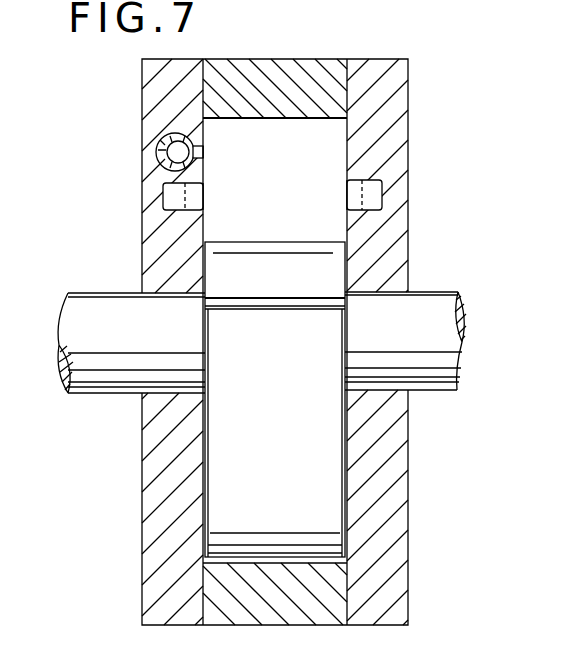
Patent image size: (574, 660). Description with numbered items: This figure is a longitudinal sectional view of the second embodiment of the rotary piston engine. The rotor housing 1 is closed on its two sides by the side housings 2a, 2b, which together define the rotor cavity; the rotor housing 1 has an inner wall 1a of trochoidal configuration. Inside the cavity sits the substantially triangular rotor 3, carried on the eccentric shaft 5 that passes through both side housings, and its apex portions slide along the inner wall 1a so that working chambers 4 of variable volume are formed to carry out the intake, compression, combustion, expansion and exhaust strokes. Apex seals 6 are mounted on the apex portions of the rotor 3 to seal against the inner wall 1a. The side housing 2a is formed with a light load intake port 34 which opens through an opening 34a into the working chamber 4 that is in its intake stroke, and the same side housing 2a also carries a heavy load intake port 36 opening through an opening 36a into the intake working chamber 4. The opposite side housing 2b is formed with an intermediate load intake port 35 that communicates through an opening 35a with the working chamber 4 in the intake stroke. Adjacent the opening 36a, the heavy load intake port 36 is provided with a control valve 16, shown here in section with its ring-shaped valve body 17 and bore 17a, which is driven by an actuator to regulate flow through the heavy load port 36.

The rotor housing 1 is at (293, 60).
The inner wall 1a is at (293, 119).
The side housing 2a is at (393, 82).
The side housing 2b is at (150, 70).
The rotor 3 is at (320, 358).
The working chamber 4 is at (288, 193).
The eccentric shaft 5 is at (97, 308).
The apex seal 6 is at (277, 310).
The control valve 16 is at (157, 130).
The bushing ring 17 is at (162, 155).
The bushing bore 17a is at (183, 153).
The light load intake port 34 is at (382, 195).
The opening 34a is at (347, 195).
The intermediate load intake port 35 is at (174, 197).
The opening 35a is at (203, 200).
The heavy load intake port 36 is at (203, 155).
The opening 36a is at (205, 146).